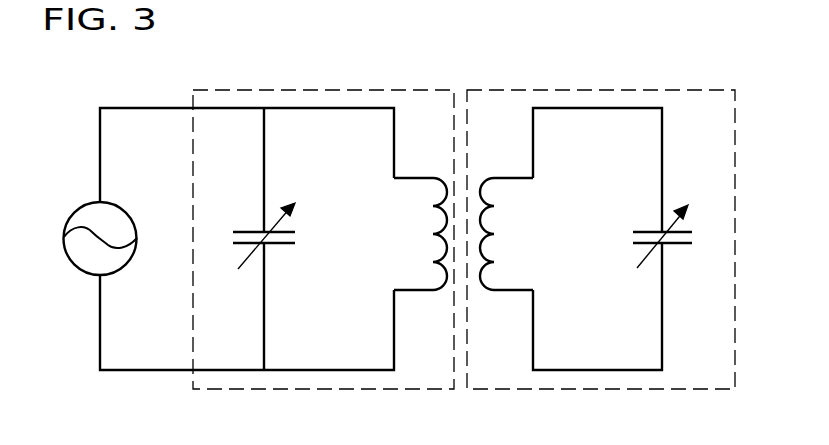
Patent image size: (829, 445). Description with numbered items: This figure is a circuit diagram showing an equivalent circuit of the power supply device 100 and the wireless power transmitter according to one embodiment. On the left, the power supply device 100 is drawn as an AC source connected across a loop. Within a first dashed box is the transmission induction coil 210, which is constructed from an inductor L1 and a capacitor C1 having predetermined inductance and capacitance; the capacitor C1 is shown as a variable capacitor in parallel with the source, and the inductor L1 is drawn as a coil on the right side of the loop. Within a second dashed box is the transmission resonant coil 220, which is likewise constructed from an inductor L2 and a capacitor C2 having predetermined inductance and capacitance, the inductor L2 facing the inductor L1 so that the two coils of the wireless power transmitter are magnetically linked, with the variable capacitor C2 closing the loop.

The power supply device 100 is at (77, 207).
The transmission induction coil 210 is at (323, 202).
The transmission resonant coil 220 is at (601, 203).
The capacitor C1 is at (250, 236).
The inductor L1 is at (420, 234).
The inductor L2 is at (506, 234).
The capacitor C2 is at (678, 236).